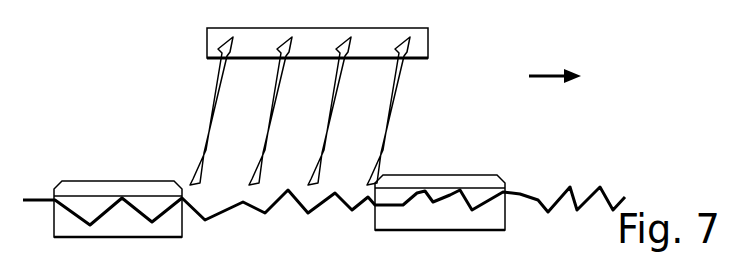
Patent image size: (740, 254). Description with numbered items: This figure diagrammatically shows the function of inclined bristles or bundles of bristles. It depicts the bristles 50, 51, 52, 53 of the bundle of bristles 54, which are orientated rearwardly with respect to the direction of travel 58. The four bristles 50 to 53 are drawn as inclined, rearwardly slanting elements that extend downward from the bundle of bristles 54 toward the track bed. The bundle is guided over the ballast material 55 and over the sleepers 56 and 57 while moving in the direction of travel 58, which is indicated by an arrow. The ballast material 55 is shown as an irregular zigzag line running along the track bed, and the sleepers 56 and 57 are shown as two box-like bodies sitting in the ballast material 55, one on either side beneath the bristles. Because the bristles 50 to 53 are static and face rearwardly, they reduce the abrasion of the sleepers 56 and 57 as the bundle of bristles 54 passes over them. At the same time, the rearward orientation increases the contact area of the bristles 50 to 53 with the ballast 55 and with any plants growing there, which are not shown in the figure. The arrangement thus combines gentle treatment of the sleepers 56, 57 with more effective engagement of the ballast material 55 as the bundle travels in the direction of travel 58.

The bristle 50 is at (212, 90).
The bristle 51 is at (268, 95).
The bristle 52 is at (328, 95).
The bristle 53 is at (387, 92).
The bundle of bristles 54 is at (417, 90).
The ballast material 55 is at (562, 193).
The sleeper 56 is at (115, 182).
The sleeper 57 is at (460, 175).
The direction of travel 58 is at (557, 67).